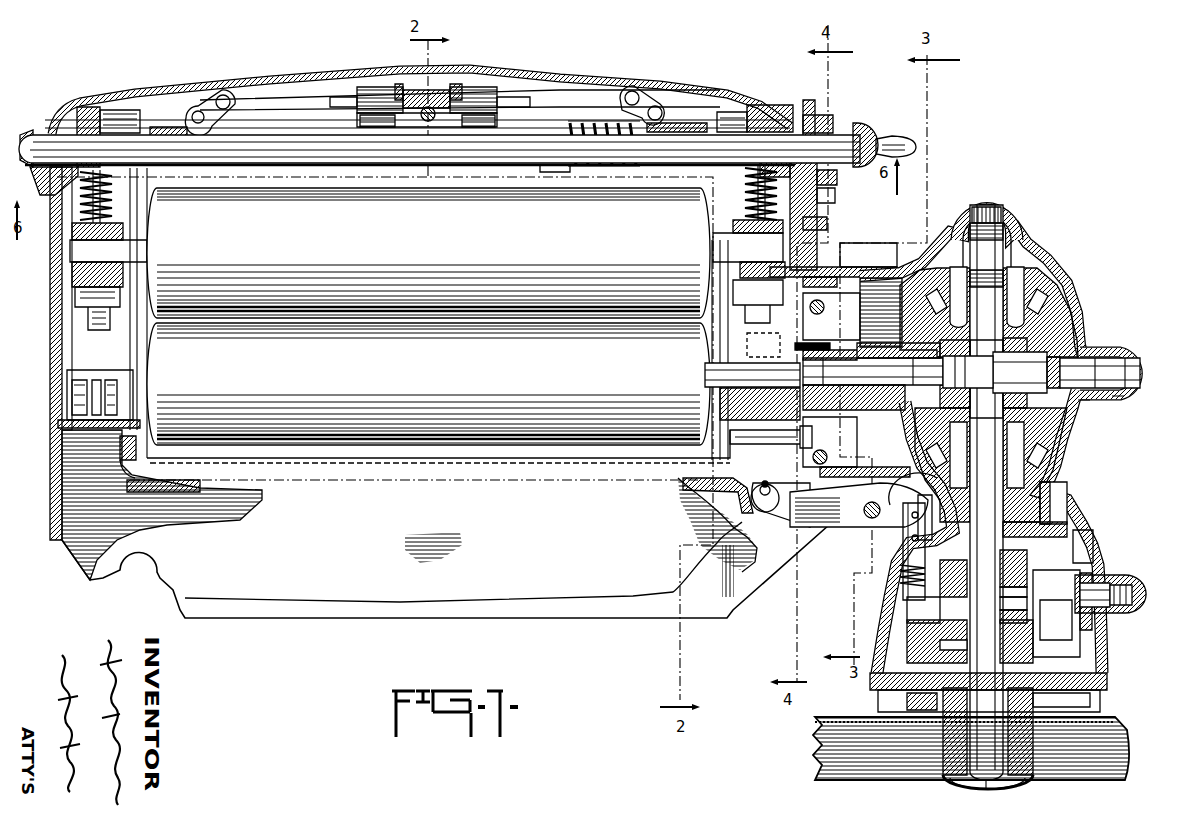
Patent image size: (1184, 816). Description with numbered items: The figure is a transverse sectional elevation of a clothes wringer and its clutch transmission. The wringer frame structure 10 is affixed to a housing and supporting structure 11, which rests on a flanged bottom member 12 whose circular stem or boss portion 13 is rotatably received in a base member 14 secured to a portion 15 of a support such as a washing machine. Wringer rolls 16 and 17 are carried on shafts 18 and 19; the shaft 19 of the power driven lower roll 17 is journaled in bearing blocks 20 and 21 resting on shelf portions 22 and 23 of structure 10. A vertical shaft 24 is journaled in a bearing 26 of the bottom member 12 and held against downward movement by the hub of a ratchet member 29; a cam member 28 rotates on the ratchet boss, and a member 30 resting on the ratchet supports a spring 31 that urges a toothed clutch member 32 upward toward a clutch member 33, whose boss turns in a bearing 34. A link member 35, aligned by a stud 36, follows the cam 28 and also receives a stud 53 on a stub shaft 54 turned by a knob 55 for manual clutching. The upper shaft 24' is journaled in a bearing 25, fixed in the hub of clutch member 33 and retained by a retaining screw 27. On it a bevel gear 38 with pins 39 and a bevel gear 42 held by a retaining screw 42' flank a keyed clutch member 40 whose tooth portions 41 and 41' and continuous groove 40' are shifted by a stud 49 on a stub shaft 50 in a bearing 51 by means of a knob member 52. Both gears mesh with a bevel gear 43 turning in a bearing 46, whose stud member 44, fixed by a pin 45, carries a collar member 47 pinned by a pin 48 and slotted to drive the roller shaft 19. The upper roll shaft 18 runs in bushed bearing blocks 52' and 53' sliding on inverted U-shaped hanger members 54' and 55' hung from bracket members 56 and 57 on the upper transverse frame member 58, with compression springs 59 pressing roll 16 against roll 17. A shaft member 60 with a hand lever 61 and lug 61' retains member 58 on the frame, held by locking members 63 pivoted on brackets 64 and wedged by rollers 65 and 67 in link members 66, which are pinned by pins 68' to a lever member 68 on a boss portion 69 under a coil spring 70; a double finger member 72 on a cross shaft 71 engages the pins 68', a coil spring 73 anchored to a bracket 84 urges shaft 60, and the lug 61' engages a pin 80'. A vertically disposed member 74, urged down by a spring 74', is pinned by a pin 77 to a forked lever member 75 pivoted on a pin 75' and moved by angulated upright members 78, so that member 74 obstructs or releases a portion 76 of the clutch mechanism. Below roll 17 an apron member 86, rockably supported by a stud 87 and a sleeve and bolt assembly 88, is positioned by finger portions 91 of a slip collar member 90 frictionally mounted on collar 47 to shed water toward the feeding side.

The wringer frame structure 10 is at (450, 524).
The housing and supporting structure 11 is at (1062, 272).
The flanged bottom member 12 is at (1098, 681).
The circular stem or boss portion 13 is at (1040, 773).
The base member 14 is at (1090, 709).
The portion of support 15 is at (1108, 752).
The upper wringer roll 16 is at (428, 253).
The lower wringer roll 17 is at (428, 384).
The shaft of upper roll 18 is at (427, 260).
The roller shaft 19 is at (149, 366).
The bearing block 20 is at (76, 378).
The bearing block 21 is at (735, 378).
The shelf portion 22 is at (80, 426).
The shelf portion 23 is at (735, 393).
The shaft 24 is at (1003, 504).
The shaft 24' is at (1023, 232).
The bearing 25 is at (958, 225).
The bearing 26 is at (950, 748).
The retaining screw 27 is at (1024, 237).
The cam member 28 is at (1082, 645).
The ratchet member 29 is at (1021, 618).
The member 30 is at (1021, 604).
The spring 31 is at (1020, 591).
The toothed clutch member 32 is at (1040, 558).
The clutch member 33 is at (1040, 527).
The bearing 34 is at (1060, 500).
The link member 35 is at (1092, 630).
The stud 36 is at (1092, 537).
The bevel gear 38 is at (1037, 457).
The pins 39 is at (1045, 302).
The clutch member 40 is at (1053, 350).
The continuous groove 40' is at (1033, 339).
The tooth portions 41 is at (983, 351).
The bevel gear 41' is at (983, 401).
The bevel gear 42 is at (1022, 294).
The retaining screw 42' is at (1044, 280).
The bevel gear 43 is at (897, 319).
The stud member 44 is at (873, 371).
The pin 45 is at (903, 418).
The bearing 46 is at (900, 343).
The collar member 47 is at (856, 347).
The pin 48 is at (851, 406).
The stud 49 is at (1052, 368).
The stub shaft 50 is at (1097, 366).
The bearing 51 is at (1082, 398).
The knob member 52 is at (1125, 409).
The bushed bearing block 52' is at (71, 308).
The stud 53 is at (1098, 582).
The bushed bearing block 53' is at (711, 300).
The stub shaft 54 is at (1114, 585).
The inverted U-shaped hanger member 54' is at (138, 226).
The knob 55 is at (1140, 591).
The inverted U-shaped hanger member 55' is at (721, 212).
The bracket member 56 is at (112, 112).
The bracket member 57 is at (745, 110).
The upper transverse frame member 58 is at (578, 77).
The compression springs 59 is at (118, 181).
The shaft member 60 is at (273, 166).
The hand lever 61 is at (896, 133).
The lug 61' is at (844, 199).
The locking members 63 is at (150, 146).
The brackets 64 is at (52, 186).
The rollers 65 is at (208, 116).
The link members 66 is at (292, 102).
The rollers 67 is at (228, 95).
The lever member 68 is at (430, 76).
The pins 68' is at (416, 132).
The boss portion 69 is at (455, 84).
The coil spring 70 is at (415, 88).
The cross shaft 71 is at (424, 120).
The double finger member 72 is at (380, 125).
The coil spring 73 is at (590, 172).
The vertically disposed member 74 is at (901, 551).
The spring 74' is at (896, 580).
The forked lever member 75 is at (859, 520).
The pin 75' is at (851, 540).
The portion of clutch operating mechanism 76 is at (906, 634).
The pin 77 is at (928, 500).
The angulated upright members 78 is at (768, 505).
The pin 80' is at (837, 154).
The bracket 84 is at (828, 228).
The apron member 86 is at (506, 461).
The stud 87 is at (137, 451).
The sleeve and bolt assembly 88 is at (727, 437).
The slip collar member 90 is at (802, 345).
The finger portions 91 is at (840, 409).